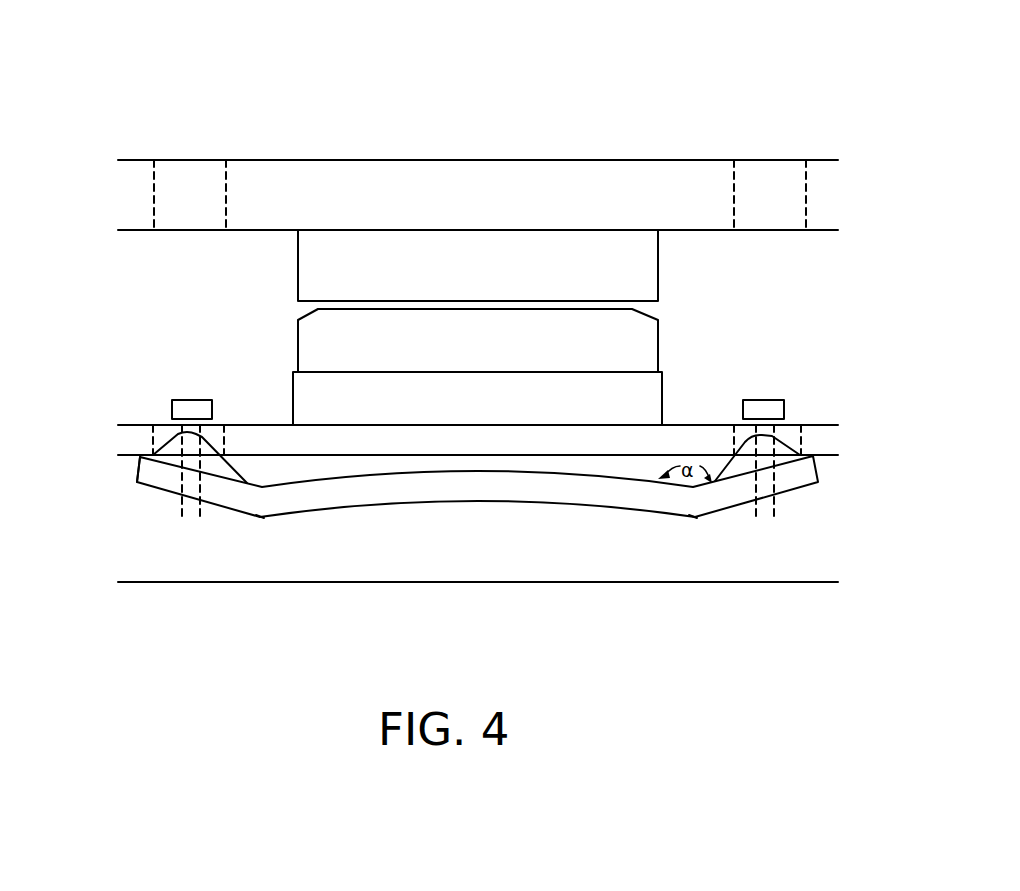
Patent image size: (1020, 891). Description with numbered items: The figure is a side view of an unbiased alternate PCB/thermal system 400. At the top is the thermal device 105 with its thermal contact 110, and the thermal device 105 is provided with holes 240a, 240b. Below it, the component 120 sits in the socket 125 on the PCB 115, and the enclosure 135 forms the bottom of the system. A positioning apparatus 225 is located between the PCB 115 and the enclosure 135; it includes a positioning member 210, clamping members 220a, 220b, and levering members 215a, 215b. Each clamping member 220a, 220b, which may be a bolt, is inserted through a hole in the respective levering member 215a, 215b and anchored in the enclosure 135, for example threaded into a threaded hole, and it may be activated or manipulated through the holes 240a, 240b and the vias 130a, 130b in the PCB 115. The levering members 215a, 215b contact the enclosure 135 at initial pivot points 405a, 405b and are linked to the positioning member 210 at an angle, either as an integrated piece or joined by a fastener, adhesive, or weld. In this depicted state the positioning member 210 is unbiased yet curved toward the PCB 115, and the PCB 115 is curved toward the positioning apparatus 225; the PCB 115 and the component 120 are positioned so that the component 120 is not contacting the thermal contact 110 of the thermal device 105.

The unbiased alternate PCB/thermal system 400 is at (110, 68).
The thermal device 105 is at (490, 160).
The hole 240a is at (188, 160).
The hole 240b is at (778, 160).
The thermal contact 110 is at (658, 250).
The component 120 is at (298, 340).
The socket 125 is at (662, 390).
The PCB 115 is at (477, 446).
The enclosure 135 is at (703, 582).
The clamping member 220a is at (188, 400).
The clamping member 220b is at (763, 400).
The via 130a is at (215, 423).
The via 130b is at (790, 423).
The positioning member 210 is at (455, 501).
The positioning apparatus 225 is at (127, 492).
The levering member 215a is at (136, 479).
The levering member 215b is at (806, 488).
The initial pivot point 405a is at (260, 517).
The initial pivot point 405b is at (693, 517).